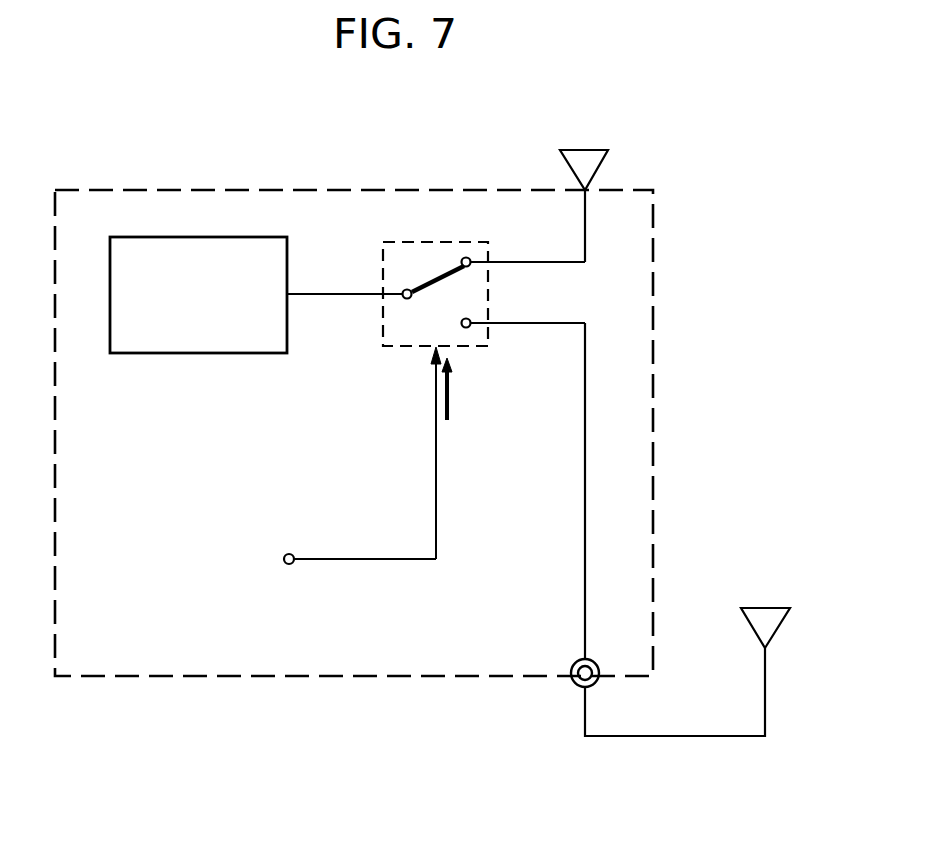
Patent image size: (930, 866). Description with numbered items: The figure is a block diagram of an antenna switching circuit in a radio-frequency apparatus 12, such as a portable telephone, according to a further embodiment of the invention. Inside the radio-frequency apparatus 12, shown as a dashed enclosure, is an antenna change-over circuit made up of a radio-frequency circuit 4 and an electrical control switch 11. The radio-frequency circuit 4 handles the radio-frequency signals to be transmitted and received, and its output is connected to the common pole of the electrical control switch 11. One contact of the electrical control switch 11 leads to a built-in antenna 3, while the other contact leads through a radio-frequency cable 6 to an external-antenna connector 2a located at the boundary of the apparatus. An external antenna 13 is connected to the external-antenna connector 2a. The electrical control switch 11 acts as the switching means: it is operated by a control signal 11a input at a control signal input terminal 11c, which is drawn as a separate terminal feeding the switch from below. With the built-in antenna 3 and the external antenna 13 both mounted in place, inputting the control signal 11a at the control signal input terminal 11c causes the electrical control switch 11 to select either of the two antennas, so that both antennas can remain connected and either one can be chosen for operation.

The radio-frequency apparatus 12 is at (160, 188).
The radio-frequency circuit 4 is at (150, 355).
The electrical control switch 11 is at (406, 350).
The control signal 11a is at (449, 398).
The control signal input terminal 11c is at (290, 553).
The built-in antenna 3 is at (592, 170).
The radio-frequency cable 6 is at (584, 492).
The external-antenna connector 2a is at (572, 664).
The external antenna 13 is at (770, 632).